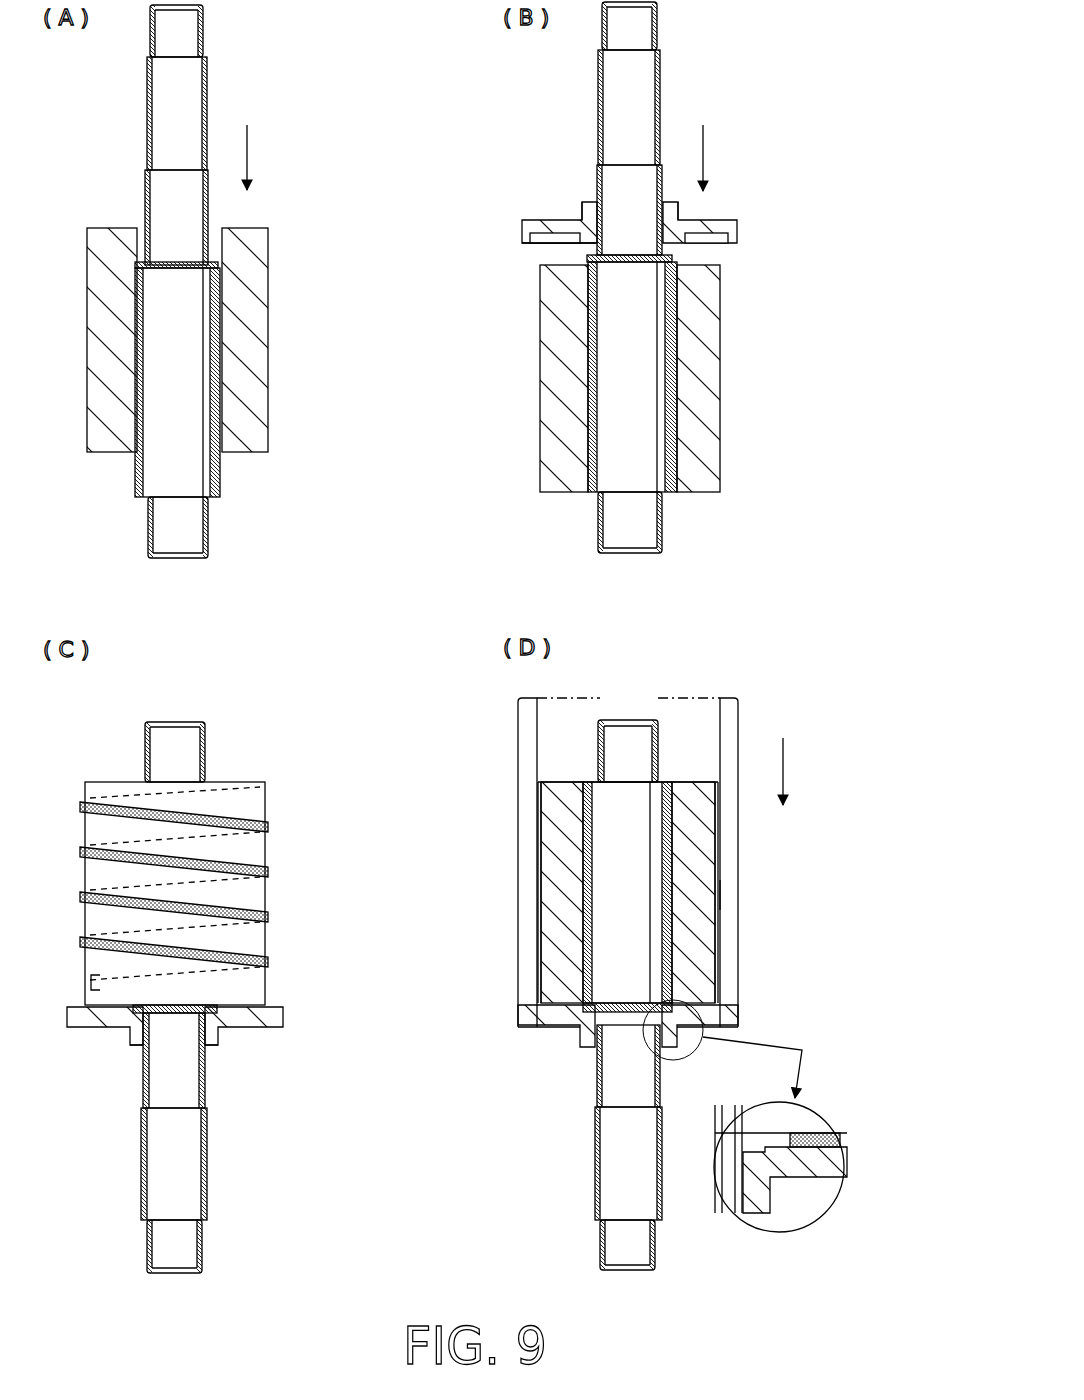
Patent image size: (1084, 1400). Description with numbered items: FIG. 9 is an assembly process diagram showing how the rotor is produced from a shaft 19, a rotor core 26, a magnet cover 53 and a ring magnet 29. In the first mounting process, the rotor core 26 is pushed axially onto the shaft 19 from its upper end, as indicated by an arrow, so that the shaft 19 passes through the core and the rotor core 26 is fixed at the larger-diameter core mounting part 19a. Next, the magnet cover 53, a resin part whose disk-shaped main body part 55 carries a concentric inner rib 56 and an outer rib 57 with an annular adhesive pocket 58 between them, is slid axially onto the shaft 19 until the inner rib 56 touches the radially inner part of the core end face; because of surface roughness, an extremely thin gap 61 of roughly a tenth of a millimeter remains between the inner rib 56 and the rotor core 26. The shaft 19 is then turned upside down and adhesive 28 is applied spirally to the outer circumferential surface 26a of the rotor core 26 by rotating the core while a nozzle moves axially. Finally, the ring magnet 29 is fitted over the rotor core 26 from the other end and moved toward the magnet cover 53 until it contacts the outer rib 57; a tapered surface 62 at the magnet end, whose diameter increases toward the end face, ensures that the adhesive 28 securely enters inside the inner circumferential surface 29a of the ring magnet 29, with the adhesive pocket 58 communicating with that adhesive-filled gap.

The shaft 19 is at (195, 74).
The core mounting part 19a is at (185, 478).
The rotor core 26 is at (250, 262).
The outer circumferential surface 26a is at (245, 892).
The adhesive 28 is at (262, 828).
The ring magnet 29 is at (728, 708).
The inner circumferential surface 29a is at (720, 892).
The magnet cover 53 is at (735, 218).
The main body part 55 is at (582, 216).
The inner rib 56 is at (555, 242).
The outer rib 57 is at (522, 236).
The adhesive pocket 58 is at (712, 243).
The gap 61 is at (756, 1128).
The tapered surface 62 is at (727, 998).